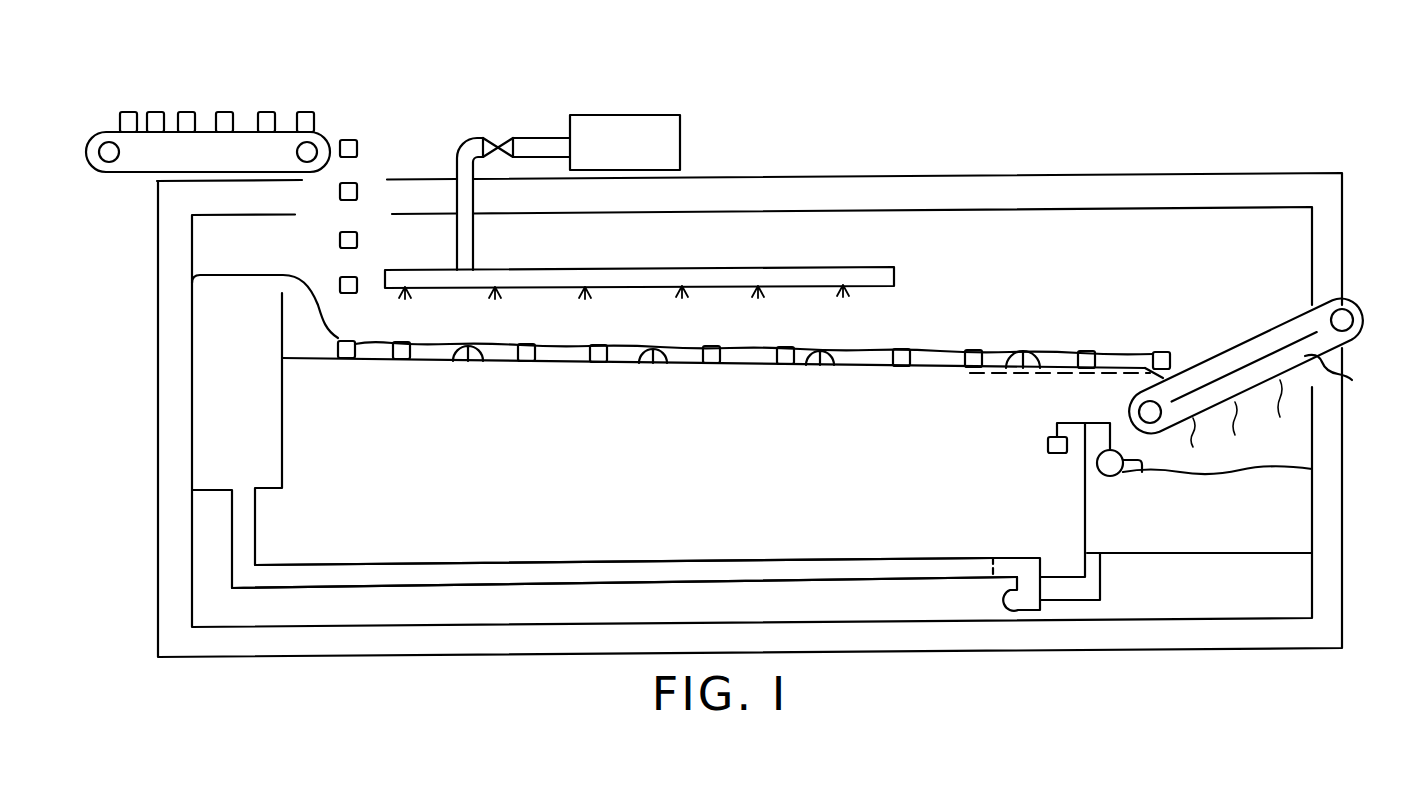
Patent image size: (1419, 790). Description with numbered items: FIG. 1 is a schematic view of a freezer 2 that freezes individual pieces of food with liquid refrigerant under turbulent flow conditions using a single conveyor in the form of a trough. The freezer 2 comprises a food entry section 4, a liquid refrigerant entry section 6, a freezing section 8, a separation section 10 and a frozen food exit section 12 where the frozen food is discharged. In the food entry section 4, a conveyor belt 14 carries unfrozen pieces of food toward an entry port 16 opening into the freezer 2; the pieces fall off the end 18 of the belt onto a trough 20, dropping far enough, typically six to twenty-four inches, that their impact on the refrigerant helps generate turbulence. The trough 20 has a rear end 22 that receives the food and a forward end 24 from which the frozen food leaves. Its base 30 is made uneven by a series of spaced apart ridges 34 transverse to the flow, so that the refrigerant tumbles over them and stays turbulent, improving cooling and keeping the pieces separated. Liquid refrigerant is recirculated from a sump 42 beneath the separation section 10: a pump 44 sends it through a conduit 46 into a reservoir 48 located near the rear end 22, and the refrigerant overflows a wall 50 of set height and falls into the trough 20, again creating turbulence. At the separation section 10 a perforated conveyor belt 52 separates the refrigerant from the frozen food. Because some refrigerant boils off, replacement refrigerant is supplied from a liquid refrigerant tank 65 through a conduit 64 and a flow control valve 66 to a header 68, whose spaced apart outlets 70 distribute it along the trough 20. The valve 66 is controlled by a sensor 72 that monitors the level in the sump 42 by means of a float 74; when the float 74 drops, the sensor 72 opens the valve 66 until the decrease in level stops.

The freezer 2 is at (1016, 150).
The food entry section 4 is at (254, 171).
The liquid refrigerant entry section 6 is at (318, 247).
The freezing section 8 is at (1019, 308).
The separation section 10 is at (1256, 306).
The frozen food exit section 12 is at (1272, 328).
The conveyor belt 14 is at (216, 163).
The entry port 16 is at (372, 176).
The end of conveyor belt 18 is at (326, 130).
The trough 20 is at (728, 340).
The rear end of trough 22 is at (322, 386).
The forward end of trough 24 is at (1146, 318).
The base of trough 30 is at (750, 363).
The ridges 34 is at (825, 363).
The sump 42 is at (1212, 526).
The pump 44 is at (1020, 546).
The conduit 46 is at (670, 565).
The reservoir 48 is at (210, 408).
The wall 50 is at (282, 318).
The conveyor belt 52 is at (1352, 380).
The conduit 64 is at (535, 143).
The liquid refrigerant tank 65 is at (638, 151).
The flow control valve 66 is at (497, 134).
The header 68 is at (712, 276).
The outlets 70 is at (845, 285).
The sensor 72 is at (1036, 452).
The float 74 is at (1142, 472).